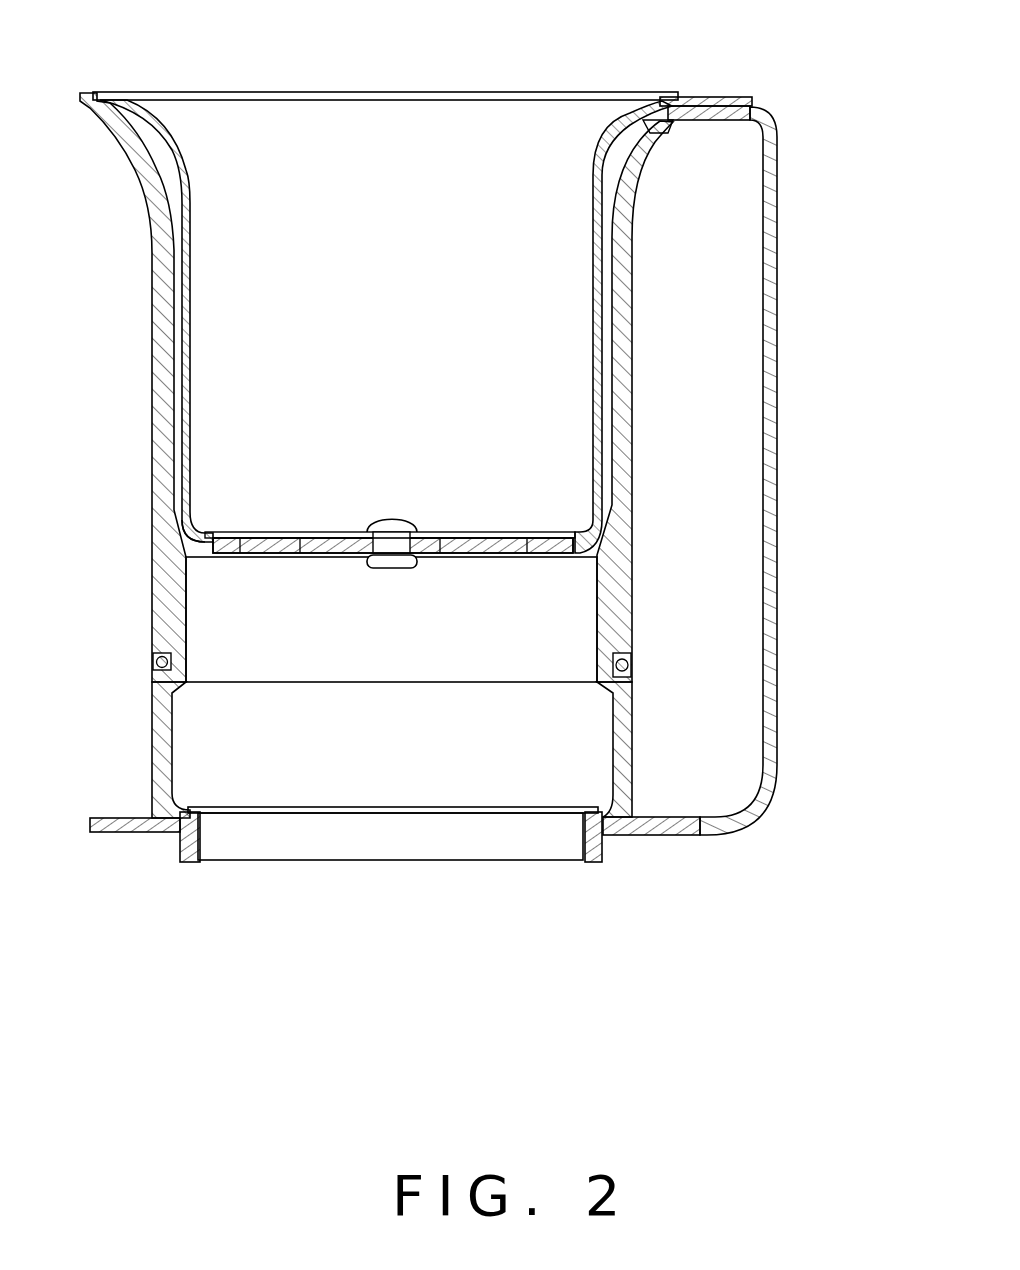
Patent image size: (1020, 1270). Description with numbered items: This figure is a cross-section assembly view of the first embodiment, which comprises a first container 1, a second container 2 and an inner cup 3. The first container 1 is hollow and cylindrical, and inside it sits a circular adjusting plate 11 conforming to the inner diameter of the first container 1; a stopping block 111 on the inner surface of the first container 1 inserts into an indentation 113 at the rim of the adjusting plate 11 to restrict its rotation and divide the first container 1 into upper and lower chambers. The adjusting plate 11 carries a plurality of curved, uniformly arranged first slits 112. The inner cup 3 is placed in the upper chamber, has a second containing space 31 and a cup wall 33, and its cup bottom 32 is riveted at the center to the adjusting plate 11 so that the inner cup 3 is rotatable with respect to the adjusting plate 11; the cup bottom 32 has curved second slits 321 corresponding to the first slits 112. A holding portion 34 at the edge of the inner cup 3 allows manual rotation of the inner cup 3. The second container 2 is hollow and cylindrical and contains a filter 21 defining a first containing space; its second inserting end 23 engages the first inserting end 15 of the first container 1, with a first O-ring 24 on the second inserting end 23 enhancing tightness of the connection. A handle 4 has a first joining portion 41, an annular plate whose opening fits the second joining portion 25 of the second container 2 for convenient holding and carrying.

The first container 1 is at (160, 314).
The second container 2 is at (465, 814).
The inner cup 3 is at (410, 276).
The handle 4 is at (713, 518).
The adjusting plate 11 is at (466, 545).
The first inserting end 15 is at (603, 680).
The filter 21 is at (540, 805).
The second inserting end 23 is at (632, 706).
The first O-ring 24 is at (158, 660).
The second joining portion 25 is at (185, 843).
The second containing space 31 is at (470, 120).
The cup bottom 32 is at (278, 537).
The cup wall 33 is at (186, 258).
The holding portion 34 is at (738, 100).
The first joining portion 41 is at (662, 836).
The stopping block 111 is at (580, 553).
The first slits 112 is at (250, 550).
The indentation 113 is at (567, 530).
The second slits 321 is at (205, 533).